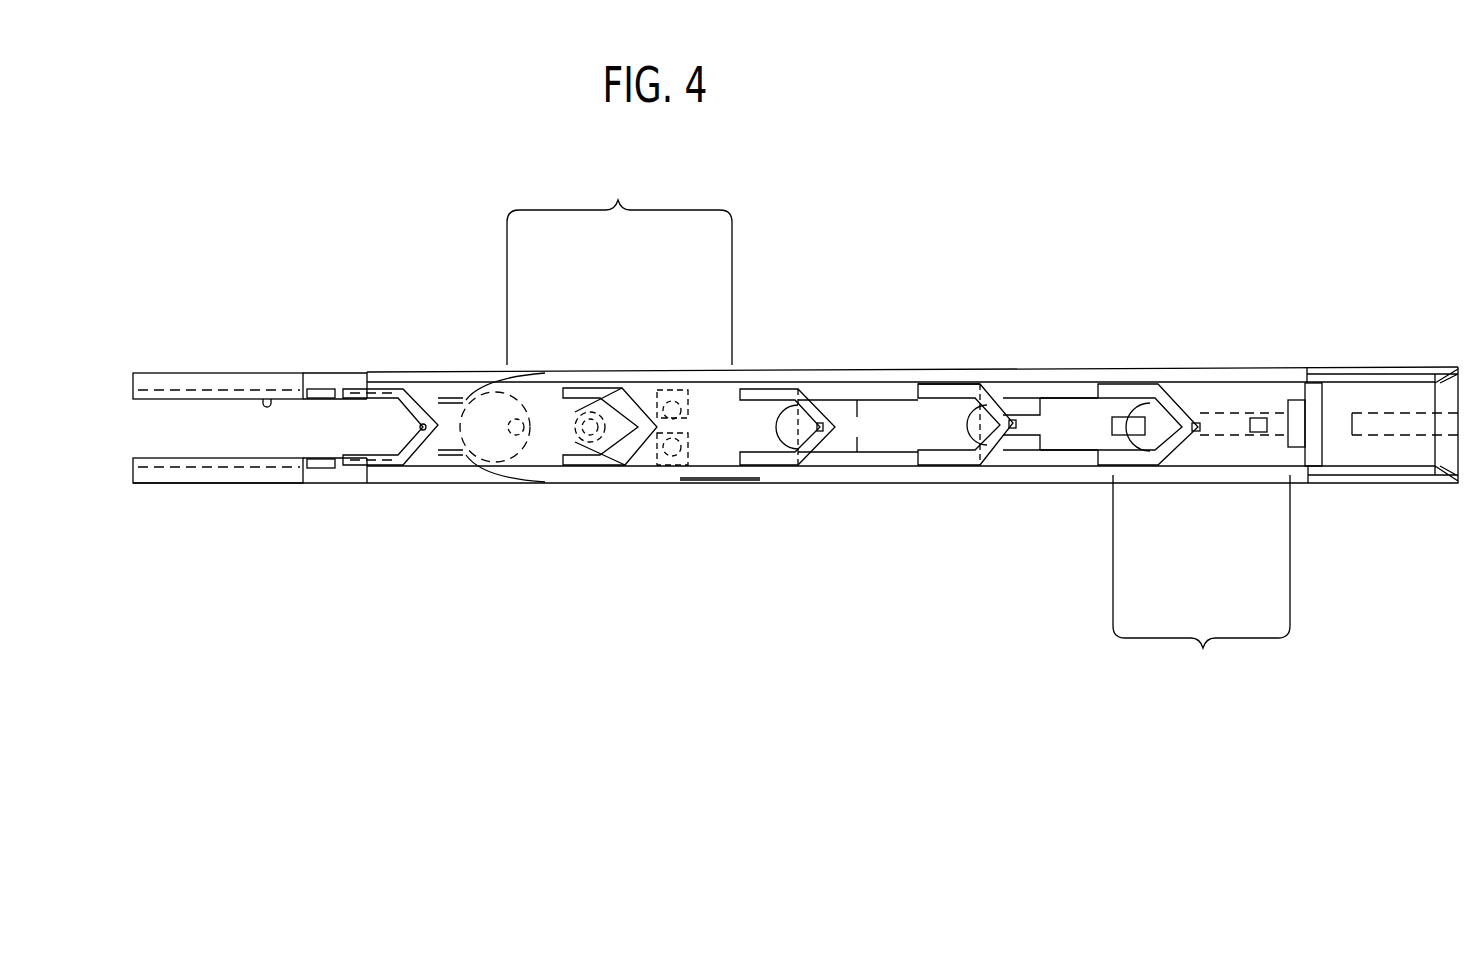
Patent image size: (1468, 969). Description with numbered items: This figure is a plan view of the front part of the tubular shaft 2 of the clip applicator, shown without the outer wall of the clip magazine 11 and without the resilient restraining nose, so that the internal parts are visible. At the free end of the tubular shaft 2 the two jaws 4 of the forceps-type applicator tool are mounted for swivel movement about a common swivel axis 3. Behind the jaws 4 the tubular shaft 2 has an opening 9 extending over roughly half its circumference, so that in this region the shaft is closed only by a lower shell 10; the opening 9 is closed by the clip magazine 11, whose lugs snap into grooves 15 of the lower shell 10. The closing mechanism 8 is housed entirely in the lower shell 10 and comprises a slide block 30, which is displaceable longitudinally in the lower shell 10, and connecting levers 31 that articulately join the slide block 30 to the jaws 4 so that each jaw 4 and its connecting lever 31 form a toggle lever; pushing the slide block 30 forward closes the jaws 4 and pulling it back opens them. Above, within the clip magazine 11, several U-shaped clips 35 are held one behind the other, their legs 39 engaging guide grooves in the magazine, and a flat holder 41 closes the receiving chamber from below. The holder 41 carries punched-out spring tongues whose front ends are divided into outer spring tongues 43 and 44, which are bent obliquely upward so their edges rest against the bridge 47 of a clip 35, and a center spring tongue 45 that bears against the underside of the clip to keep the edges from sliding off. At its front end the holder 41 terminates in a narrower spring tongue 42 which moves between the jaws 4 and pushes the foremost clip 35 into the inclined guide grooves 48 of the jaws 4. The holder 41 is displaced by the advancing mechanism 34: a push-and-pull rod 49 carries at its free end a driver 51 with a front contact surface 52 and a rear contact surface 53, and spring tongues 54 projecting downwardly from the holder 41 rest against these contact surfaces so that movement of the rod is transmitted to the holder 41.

The tubular shaft 2 is at (1390, 490).
The swivel axis 3 is at (462, 489).
The jaws 4 is at (187, 485).
The closing mechanism 8 is at (537, 386).
The opening 9 is at (1072, 360).
The lower shell 10 is at (868, 480).
The clip magazine 11 is at (866, 370).
The grooves 15 is at (733, 482).
The slide block 30 is at (768, 405).
The connecting lever 31 is at (643, 456).
The advancing mechanism 34 is at (1230, 471).
The clips 35 is at (386, 372).
The legs 39 is at (346, 462).
The holder 41 is at (488, 455).
The spring tongue 42 is at (973, 431).
The outer spring tongue 43 is at (1003, 385).
The outer spring tongue 44 is at (1016, 446).
The center spring tongue 45 is at (1025, 425).
The bridge 47 is at (1003, 435).
The guide grooves 48 is at (267, 388).
The push-and-pull rod 49 is at (1340, 418).
The driver 51 is at (1202, 413).
The front contact surface 52 is at (1133, 395).
The rear contact surface 53 is at (1300, 390).
The spring tongues 54 is at (1292, 448).